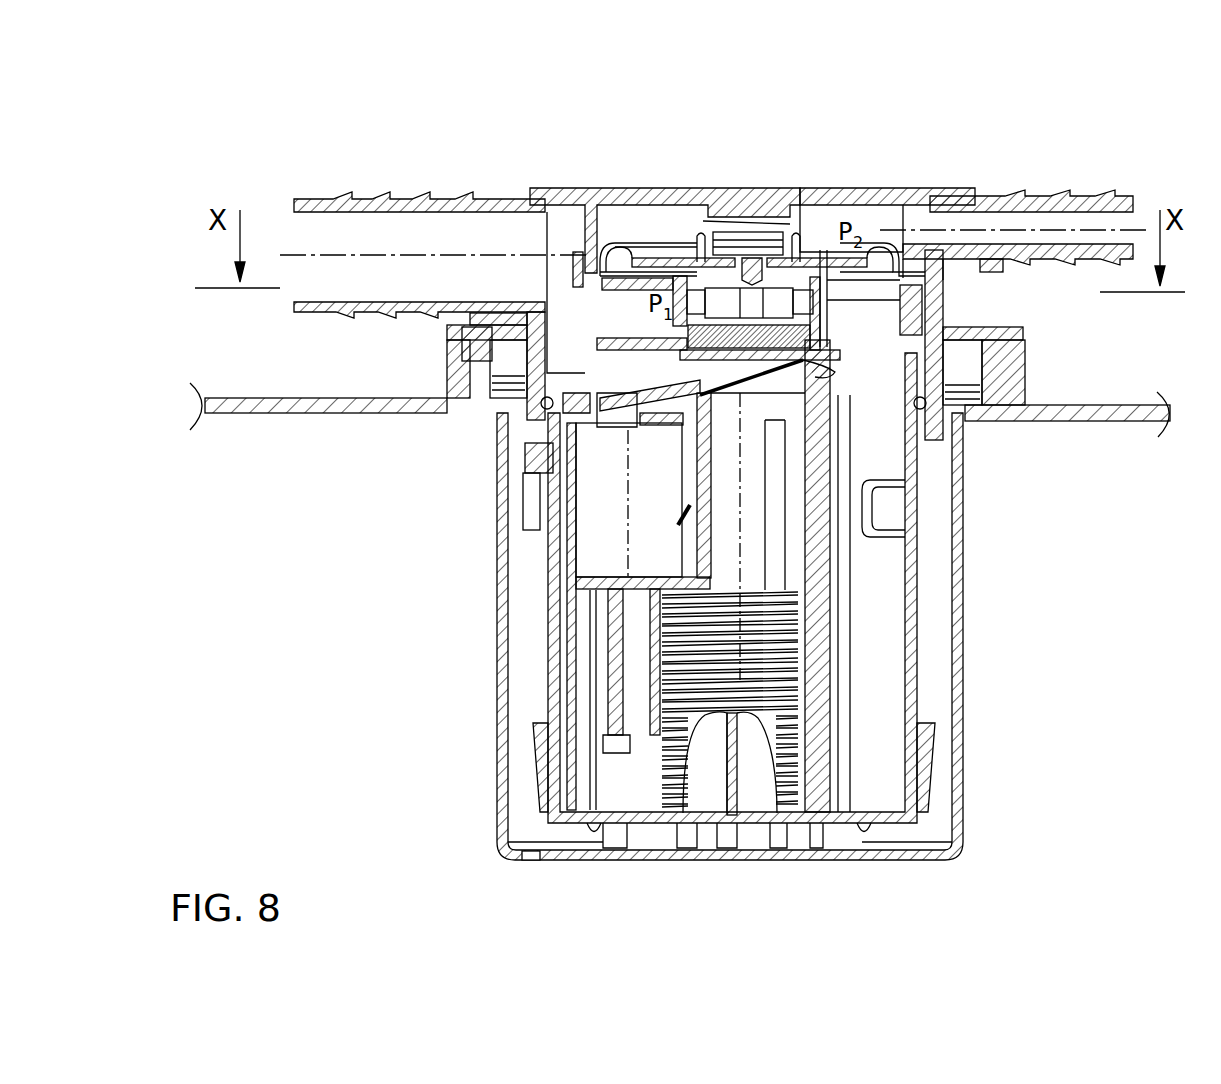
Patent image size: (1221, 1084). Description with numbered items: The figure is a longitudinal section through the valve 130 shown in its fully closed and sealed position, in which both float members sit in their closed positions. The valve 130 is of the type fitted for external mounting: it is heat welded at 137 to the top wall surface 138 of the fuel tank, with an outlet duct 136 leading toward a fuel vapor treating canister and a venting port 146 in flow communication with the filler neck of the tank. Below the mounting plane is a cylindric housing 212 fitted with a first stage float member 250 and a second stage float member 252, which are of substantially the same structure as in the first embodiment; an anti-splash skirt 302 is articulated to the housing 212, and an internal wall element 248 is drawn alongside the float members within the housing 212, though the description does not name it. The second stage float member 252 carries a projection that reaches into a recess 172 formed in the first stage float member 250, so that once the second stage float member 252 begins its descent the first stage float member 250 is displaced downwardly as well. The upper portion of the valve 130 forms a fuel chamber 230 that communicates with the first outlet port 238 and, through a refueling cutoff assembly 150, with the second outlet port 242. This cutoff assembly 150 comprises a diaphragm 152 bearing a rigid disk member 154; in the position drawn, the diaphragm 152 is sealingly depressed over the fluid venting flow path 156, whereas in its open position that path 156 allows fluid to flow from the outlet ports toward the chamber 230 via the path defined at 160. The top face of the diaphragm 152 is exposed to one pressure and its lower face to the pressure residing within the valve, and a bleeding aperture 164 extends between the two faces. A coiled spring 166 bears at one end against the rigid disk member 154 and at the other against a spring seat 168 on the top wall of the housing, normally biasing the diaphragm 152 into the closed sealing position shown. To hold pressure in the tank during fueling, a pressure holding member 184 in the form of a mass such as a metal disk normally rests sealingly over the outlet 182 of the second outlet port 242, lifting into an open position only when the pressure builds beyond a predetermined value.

The valve 130 is at (472, 543).
The outlet duct 136 is at (320, 193).
The heat welding location 137 is at (437, 397).
The top wall surface 138 is at (1093, 418).
The venting port 146 is at (1067, 200).
The refueling cutoff assembly 150 is at (640, 243).
The diaphragm 152 is at (922, 190).
The rigid disk member 154 is at (850, 266).
The fluid venting flow path 156 is at (678, 265).
The flow path 160 is at (777, 305).
The bleeding aperture 164 is at (748, 273).
The coiled spring 166 is at (813, 205).
The spring seat 168 is at (757, 228).
The recess 172 is at (523, 473).
The outlet 182 is at (550, 443).
The pressure holding member 184 is at (940, 272).
The cylindric housing 212 is at (915, 627).
The fuel chamber 230 is at (543, 330).
The first outlet port 238 is at (482, 330).
The second outlet port 242 is at (900, 317).
The guide wall 248 is at (580, 603).
The first stage float member 250 is at (568, 550).
The second stage float member 252 is at (818, 560).
The anti-splash skirt 302 is at (960, 703).